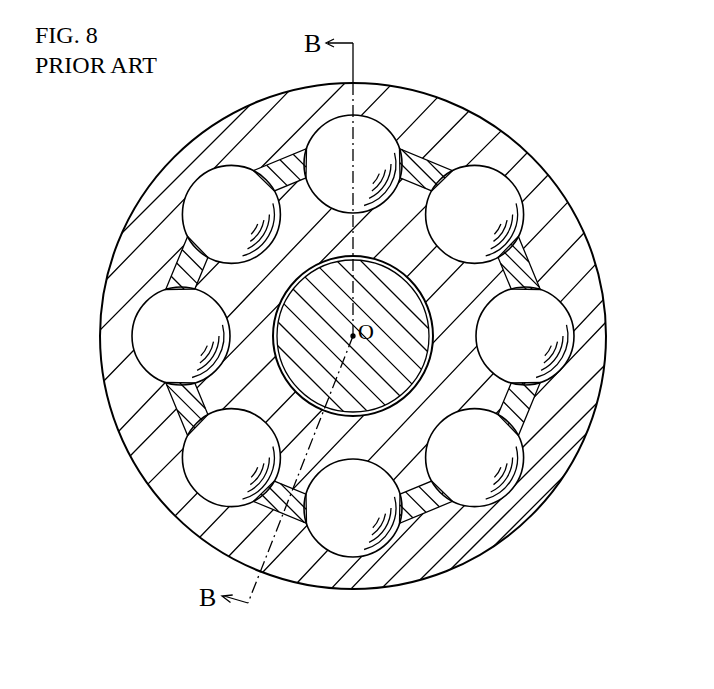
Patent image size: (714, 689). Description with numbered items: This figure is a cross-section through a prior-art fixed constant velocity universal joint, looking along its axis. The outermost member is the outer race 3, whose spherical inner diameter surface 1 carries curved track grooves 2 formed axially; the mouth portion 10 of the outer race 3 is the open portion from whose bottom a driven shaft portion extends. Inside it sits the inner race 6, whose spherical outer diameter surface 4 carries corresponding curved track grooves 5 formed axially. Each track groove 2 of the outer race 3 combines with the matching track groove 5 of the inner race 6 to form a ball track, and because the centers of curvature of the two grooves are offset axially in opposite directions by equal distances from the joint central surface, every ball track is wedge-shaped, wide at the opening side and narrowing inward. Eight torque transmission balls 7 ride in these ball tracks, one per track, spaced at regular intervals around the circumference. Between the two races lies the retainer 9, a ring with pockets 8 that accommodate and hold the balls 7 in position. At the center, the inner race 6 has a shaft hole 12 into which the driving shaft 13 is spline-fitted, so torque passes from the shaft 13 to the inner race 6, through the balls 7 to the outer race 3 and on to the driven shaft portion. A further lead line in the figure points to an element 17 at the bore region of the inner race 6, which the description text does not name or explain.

The spherical inner diameter surface 1 is at (428, 507).
The curved track grooves 2 is at (492, 168).
The outer race 3 is at (150, 504).
The spherical outer diameter surface 4 is at (183, 257).
The curved track grooves 5 is at (313, 130).
The inner race 6 is at (527, 407).
The torque transmission balls 7 is at (353, 535).
The pockets 8 is at (508, 283).
The retainer 9 is at (418, 158).
The mouth portion 10 is at (205, 160).
The shaft hole 12 is at (438, 293).
The shaft 13 is at (303, 360).
The shaft 17 is at (300, 313).